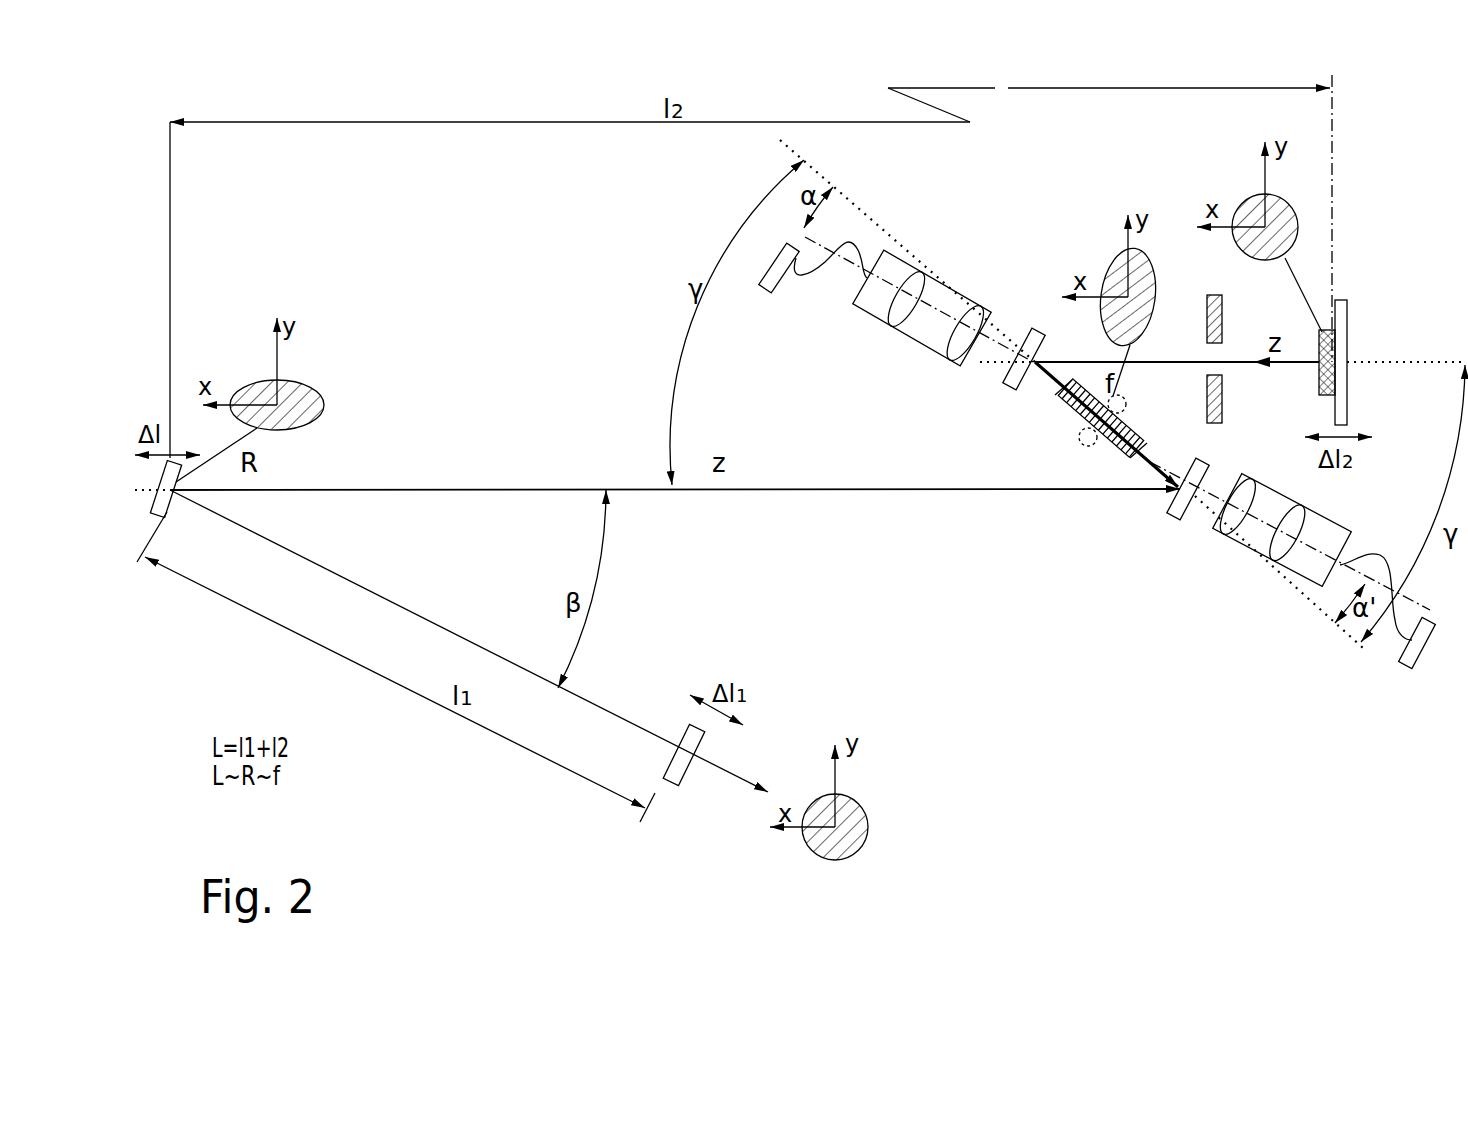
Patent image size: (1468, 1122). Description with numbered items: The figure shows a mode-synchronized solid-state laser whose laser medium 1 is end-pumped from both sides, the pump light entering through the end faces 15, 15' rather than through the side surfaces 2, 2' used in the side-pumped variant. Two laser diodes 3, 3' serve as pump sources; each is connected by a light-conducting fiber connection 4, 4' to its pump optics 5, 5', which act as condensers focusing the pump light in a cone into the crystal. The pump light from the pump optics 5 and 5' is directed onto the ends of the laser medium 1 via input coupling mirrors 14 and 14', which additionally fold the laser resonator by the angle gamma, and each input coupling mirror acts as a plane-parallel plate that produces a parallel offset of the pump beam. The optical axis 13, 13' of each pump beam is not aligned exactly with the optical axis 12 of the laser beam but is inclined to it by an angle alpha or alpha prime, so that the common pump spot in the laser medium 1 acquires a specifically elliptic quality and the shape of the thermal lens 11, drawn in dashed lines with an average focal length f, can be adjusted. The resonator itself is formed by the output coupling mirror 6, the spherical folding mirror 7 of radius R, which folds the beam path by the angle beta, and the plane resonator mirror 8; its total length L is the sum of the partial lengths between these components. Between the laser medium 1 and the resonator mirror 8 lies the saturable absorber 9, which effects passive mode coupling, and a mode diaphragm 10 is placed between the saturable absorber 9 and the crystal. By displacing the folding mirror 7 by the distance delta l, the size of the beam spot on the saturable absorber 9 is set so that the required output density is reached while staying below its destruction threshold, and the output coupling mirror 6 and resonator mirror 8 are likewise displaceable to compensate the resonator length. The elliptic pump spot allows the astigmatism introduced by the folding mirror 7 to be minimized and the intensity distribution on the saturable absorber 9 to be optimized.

The laser medium 1 is at (1040, 398).
The side surface 2 is at (1073, 419).
The side surface 2' is at (1149, 391).
The laser diode 3 is at (763, 300).
The laser diode 3' is at (1382, 682).
The light-conducting fiber connection 4 is at (820, 299).
The light-conducting fiber connection 4' is at (1384, 570).
The pump optics 5 is at (922, 322).
The pump optics 5' is at (1282, 560).
The output coupling mirror 6 is at (690, 722).
The spherical folding mirror 7 is at (167, 510).
The resonator mirror 8 is at (1343, 302).
The saturable absorber 9 is at (1322, 395).
The mode diaphragm 10 is at (1205, 293).
The thermal lens 11 is at (1085, 443).
The optical axis 12 is at (575, 487).
The optical axis of the pump beam 13 is at (920, 272).
The optical axis of the pump beam 13' is at (1290, 604).
The input coupling mirror 14 is at (1011, 317).
The input coupling mirror 14' is at (1193, 550).
The end face 15 is at (1032, 409).
The end face 15' is at (1198, 442).